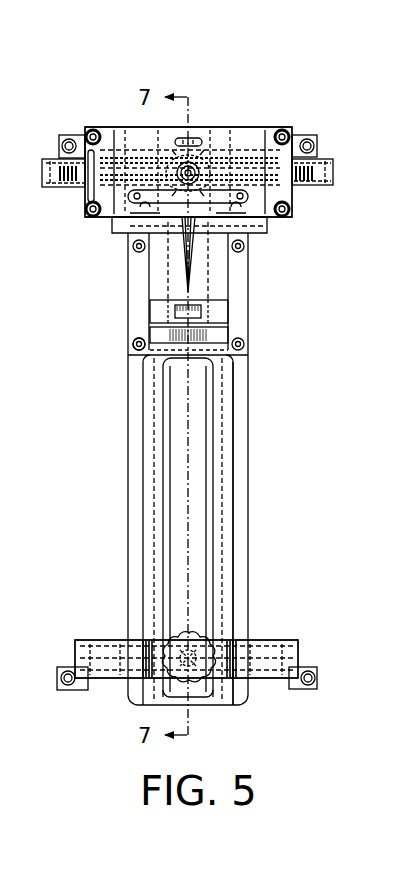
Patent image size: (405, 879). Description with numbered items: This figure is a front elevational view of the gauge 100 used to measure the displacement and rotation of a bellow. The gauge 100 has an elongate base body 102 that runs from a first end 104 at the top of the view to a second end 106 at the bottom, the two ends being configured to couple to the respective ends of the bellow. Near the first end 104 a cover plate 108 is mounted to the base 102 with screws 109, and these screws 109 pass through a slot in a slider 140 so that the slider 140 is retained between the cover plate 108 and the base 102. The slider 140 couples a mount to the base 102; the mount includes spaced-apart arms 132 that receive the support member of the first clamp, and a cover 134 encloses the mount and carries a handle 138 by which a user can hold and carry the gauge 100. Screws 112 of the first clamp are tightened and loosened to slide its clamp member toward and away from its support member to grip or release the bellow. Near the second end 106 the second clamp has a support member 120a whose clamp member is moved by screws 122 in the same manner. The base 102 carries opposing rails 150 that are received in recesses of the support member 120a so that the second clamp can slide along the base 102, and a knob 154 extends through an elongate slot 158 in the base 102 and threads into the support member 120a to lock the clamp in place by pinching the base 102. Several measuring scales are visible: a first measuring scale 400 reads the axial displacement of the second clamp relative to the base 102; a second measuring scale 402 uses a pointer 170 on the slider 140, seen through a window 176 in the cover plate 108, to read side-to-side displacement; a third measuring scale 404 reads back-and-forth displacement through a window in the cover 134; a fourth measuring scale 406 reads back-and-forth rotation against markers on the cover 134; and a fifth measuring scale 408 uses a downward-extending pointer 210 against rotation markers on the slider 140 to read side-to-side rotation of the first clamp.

The gauge 100 is at (290, 92).
The base body 102 is at (229, 584).
The first end 104 is at (222, 120).
The second end 106 is at (118, 752).
The cover plate 108 is at (244, 314).
The screws 109 is at (131, 347).
The screws 112 is at (318, 146).
The support member 120a is at (300, 650).
The screws 122 is at (318, 678).
The arms 132 is at (318, 182).
The cover 134 is at (242, 130).
The handle 138 is at (243, 196).
The slider 140 is at (212, 316).
The rails 150 is at (250, 410).
The knob 154 is at (176, 663).
The elongate slot 158 is at (194, 566).
The pointer 170 is at (178, 322).
The window 176 is at (148, 312).
The pointer 210 is at (184, 290).
The first measuring scale 400 is at (240, 688).
The second measuring scale 402 is at (226, 336).
The third measuring scale 404 is at (172, 138).
The fourth measuring scale 406 is at (82, 193).
The fifth measuring scale 408 is at (216, 289).